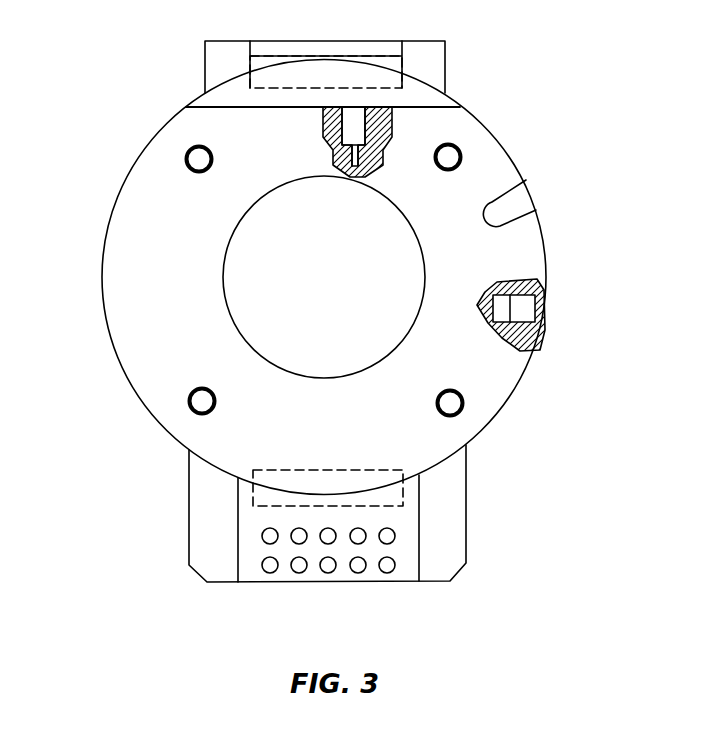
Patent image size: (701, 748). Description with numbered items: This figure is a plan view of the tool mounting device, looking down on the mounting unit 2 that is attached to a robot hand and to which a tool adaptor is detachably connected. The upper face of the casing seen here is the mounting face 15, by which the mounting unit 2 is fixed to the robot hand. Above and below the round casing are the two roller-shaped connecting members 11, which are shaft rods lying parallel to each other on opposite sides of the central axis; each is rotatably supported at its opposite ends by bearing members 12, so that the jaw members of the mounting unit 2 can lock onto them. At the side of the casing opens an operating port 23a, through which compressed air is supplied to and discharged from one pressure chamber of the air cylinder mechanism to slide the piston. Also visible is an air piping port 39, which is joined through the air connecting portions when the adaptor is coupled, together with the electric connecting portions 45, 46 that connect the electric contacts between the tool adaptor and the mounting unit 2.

The mounting unit 2 is at (95, 202).
The connecting member 11 is at (262, 64).
The bearing member 12 is at (222, 55).
The mounting face 15 is at (143, 353).
The operating port 23a is at (354, 123).
The air piping port 39 is at (521, 310).
The electric connecting portion 45 is at (276, 610).
The electric connecting portion 46 is at (327, 542).